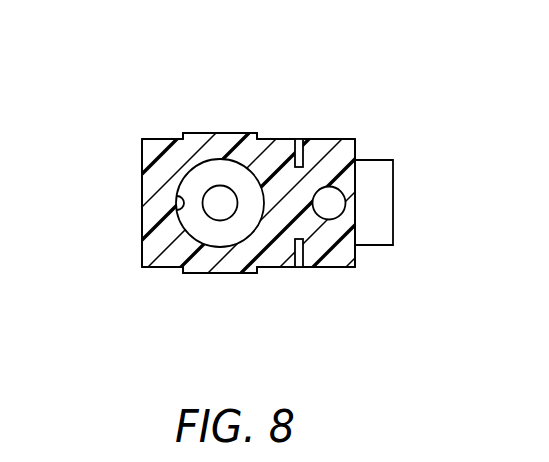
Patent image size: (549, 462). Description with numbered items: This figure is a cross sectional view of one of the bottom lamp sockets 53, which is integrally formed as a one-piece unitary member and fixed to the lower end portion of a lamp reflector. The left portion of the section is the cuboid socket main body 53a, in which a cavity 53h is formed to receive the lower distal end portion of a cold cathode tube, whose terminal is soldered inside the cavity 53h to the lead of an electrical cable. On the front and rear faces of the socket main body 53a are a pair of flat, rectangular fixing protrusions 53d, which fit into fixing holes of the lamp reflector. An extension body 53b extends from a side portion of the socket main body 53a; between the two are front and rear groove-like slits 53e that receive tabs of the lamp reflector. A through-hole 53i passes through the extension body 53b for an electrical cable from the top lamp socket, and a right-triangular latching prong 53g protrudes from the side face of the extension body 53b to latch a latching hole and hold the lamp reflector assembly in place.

The bottom lamp socket 53 is at (139, 118).
The socket main body 53a is at (155, 170).
The extension body 53b is at (345, 150).
The fixing protrusions 53d is at (225, 132).
The groove-like slits 53e is at (302, 138).
The latching prong 53g is at (380, 183).
The cavity 53h is at (172, 207).
The through-hole 53i is at (332, 203).